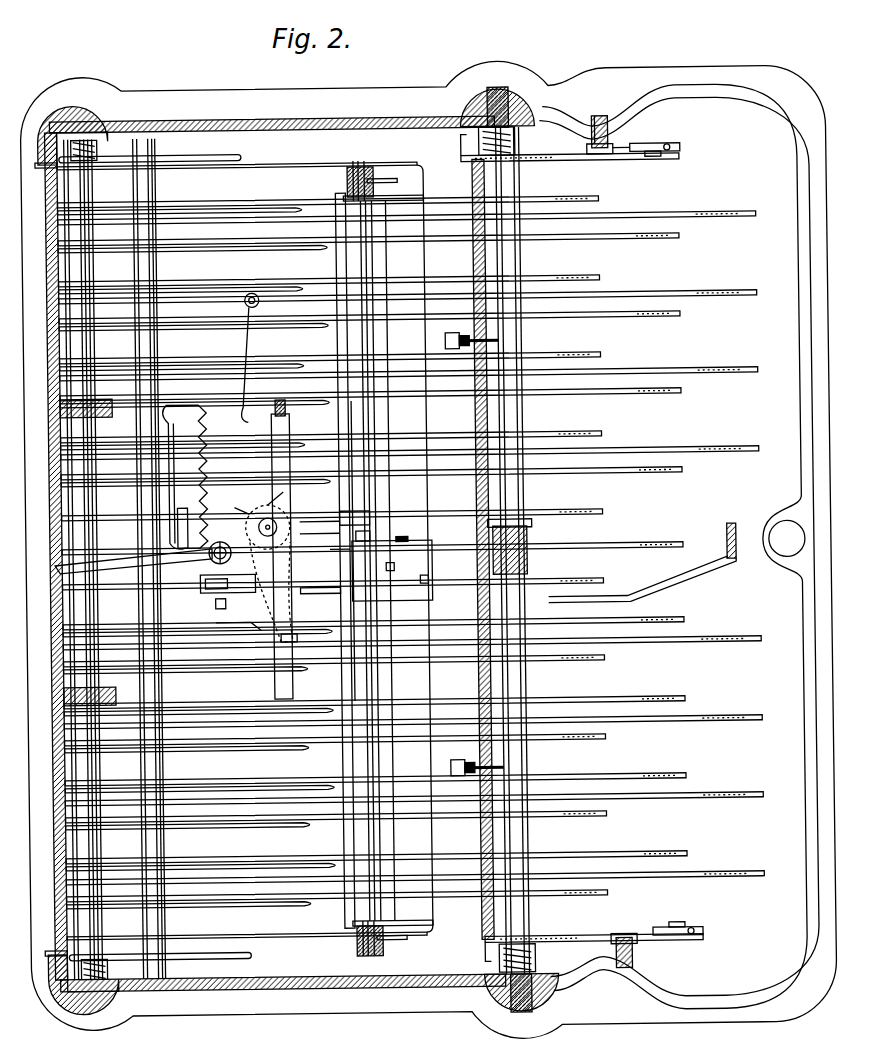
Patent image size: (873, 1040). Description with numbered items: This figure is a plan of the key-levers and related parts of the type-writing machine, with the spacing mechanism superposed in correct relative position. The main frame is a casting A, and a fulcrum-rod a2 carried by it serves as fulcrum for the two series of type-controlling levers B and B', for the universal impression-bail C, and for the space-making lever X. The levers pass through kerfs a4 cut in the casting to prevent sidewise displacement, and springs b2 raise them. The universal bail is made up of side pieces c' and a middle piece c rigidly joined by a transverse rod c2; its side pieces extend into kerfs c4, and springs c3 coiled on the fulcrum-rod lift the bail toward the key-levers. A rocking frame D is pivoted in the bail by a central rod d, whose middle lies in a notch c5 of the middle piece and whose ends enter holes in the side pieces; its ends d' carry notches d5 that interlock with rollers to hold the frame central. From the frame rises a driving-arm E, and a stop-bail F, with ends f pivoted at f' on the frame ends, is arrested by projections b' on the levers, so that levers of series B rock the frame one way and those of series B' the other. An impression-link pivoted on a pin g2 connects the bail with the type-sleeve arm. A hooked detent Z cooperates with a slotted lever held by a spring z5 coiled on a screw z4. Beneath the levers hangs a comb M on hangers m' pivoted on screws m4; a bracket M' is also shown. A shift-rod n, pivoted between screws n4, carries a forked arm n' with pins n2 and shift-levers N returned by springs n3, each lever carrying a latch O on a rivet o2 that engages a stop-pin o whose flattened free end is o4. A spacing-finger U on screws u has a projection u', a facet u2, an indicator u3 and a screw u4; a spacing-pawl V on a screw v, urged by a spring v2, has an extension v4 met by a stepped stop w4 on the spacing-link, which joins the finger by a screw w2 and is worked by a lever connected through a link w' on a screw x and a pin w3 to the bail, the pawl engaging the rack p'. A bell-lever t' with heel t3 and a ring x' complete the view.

The frame-casting A is at (300, 128).
The fulcrum-rod a2 is at (100, 847).
The kerfs a4 is at (250, 558).
The type-controlling levers B is at (411, 572).
The type-controlling levers B' is at (382, 536).
The springs b2 is at (196, 542).
The projections b' is at (357, 547).
The universal impression-bail C is at (155, 558).
The middle piece c is at (92, 552).
The transverse rod c2 is at (148, 186).
The springs c3 is at (100, 149).
The kerfs c4 is at (42, 161).
The side pieces c' is at (242, 542).
The notch c5 is at (398, 564).
The rocking frame D is at (424, 264).
The central rod d is at (392, 560).
The ends of rocking frame d' is at (414, 542).
The notches d5 is at (362, 556).
The driving-arm E is at (359, 551).
The stop-bail F is at (332, 560).
The ends of stop-bail f is at (387, 556).
The pivot pins f' is at (348, 558).
The pin g2 is at (414, 580).
The comb M is at (467, 549).
The bracket M' is at (395, 504).
The screws m4 is at (448, 338).
The hangers m' is at (429, 554).
The shift-lever N is at (565, 937).
The shift-rod n is at (522, 550).
The forked arm n' is at (518, 531).
The pins n2 is at (510, 550).
The springs n3 is at (518, 547).
The pivot-screws n4 is at (510, 547).
The hanging latch O is at (644, 541).
The stop-pin o is at (594, 542).
The screw or rivet o2 is at (684, 542).
The free end of stop-pin o4 is at (615, 543).
The rack p' is at (182, 483).
The bell-lever t' is at (250, 357).
The heel t3 is at (185, 477).
The spacing-finger U is at (279, 564).
The screws u is at (282, 552).
The lateral projection u' is at (235, 501).
The stop-facet u2 is at (232, 554).
The indicator u3 is at (148, 532).
The screw u4 is at (133, 560).
The spacing-pawl V is at (266, 518).
The screw v is at (276, 497).
The spring v2 is at (319, 509).
The lateral extension v4 is at (320, 531).
The link w' is at (215, 582).
The screw w2 is at (243, 607).
The pin w3 is at (321, 602).
The stepped stop w4 is at (294, 642).
The space-making lever X is at (675, 580).
The screw x is at (238, 622).
The ring x' is at (787, 538).
The hooked detent Z is at (383, 565).
The screw z4 is at (333, 547).
The spring z5 is at (405, 530).